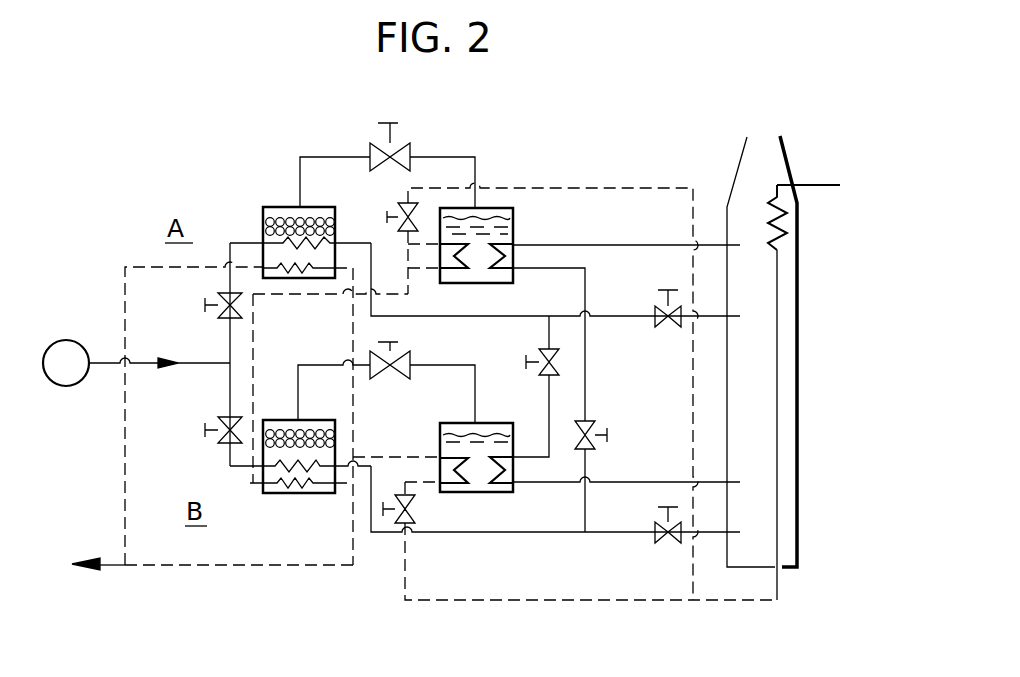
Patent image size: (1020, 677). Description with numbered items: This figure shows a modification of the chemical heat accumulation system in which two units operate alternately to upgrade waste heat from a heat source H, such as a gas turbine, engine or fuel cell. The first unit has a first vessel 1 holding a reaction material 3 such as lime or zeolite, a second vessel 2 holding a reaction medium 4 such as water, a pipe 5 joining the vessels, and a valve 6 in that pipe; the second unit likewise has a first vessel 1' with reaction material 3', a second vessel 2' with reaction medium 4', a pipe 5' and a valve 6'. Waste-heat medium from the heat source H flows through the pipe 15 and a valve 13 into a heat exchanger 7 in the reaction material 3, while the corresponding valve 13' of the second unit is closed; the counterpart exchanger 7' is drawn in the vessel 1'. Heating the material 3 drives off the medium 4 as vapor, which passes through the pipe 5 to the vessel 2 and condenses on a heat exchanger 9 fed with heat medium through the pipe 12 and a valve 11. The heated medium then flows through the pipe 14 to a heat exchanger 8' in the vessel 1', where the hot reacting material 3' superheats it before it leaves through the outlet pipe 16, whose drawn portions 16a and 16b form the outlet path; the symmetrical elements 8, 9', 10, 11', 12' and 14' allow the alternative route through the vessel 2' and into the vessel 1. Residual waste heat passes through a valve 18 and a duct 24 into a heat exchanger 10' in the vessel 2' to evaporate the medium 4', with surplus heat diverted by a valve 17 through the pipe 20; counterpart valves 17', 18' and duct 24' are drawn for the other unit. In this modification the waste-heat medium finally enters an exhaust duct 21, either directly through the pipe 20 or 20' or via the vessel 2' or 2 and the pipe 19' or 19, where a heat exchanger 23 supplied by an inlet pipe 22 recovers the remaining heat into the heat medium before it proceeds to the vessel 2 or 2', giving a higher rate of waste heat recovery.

The first vessel 1 is at (294, 211).
The first vessel 1' is at (299, 417).
The second vessel 2 is at (496, 239).
The second vessel 2' is at (477, 435).
The reaction material 3 is at (277, 206).
The reaction material 3' is at (300, 410).
The reaction medium 4 is at (509, 226).
The reaction medium 4' is at (472, 408).
The pipe 5 is at (387, 161).
The pipe 5' is at (386, 376).
The valve 6 is at (382, 129).
The valve 6' is at (385, 385).
The heat exchanger 7 is at (300, 284).
The heating coil 7' is at (300, 504).
The cooling coil 8 is at (299, 297).
The heat exchanger 8' is at (301, 513).
The heat exchanger 9 is at (449, 280).
The heat exchange coil 9' is at (452, 495).
The heat exchange coil 10 is at (510, 281).
The heat exchanger 10' is at (512, 495).
The valve 11 is at (382, 205).
The valve 11' is at (387, 548).
The pipe 12 is at (553, 369).
The pipe 12' is at (590, 576).
The valve 13 is at (192, 299).
The valve 13' is at (192, 450).
The pipe 14 is at (330, 363).
The pipe 14' is at (396, 430).
The pipe 15 is at (203, 367).
The outlet pipe 16 is at (118, 567).
The heating medium circuit section 16a is at (125, 452).
The heating medium circuit section 16b is at (207, 567).
The valve 17 is at (671, 329).
The valve 17' is at (643, 546).
The valve 18 is at (522, 386).
The valve 18' is at (624, 442).
The pipe 19 is at (640, 214).
The pipe 19' is at (641, 448).
The outlet pipe 20 is at (570, 279).
The pipe 20' is at (570, 499).
The exhaust duct 21 is at (800, 273).
The inlet pipe 22 is at (808, 185).
The heat exchanger 23 is at (777, 233).
The duct 24 is at (570, 344).
The line 24' is at (621, 458).
The heat source H is at (77, 340).